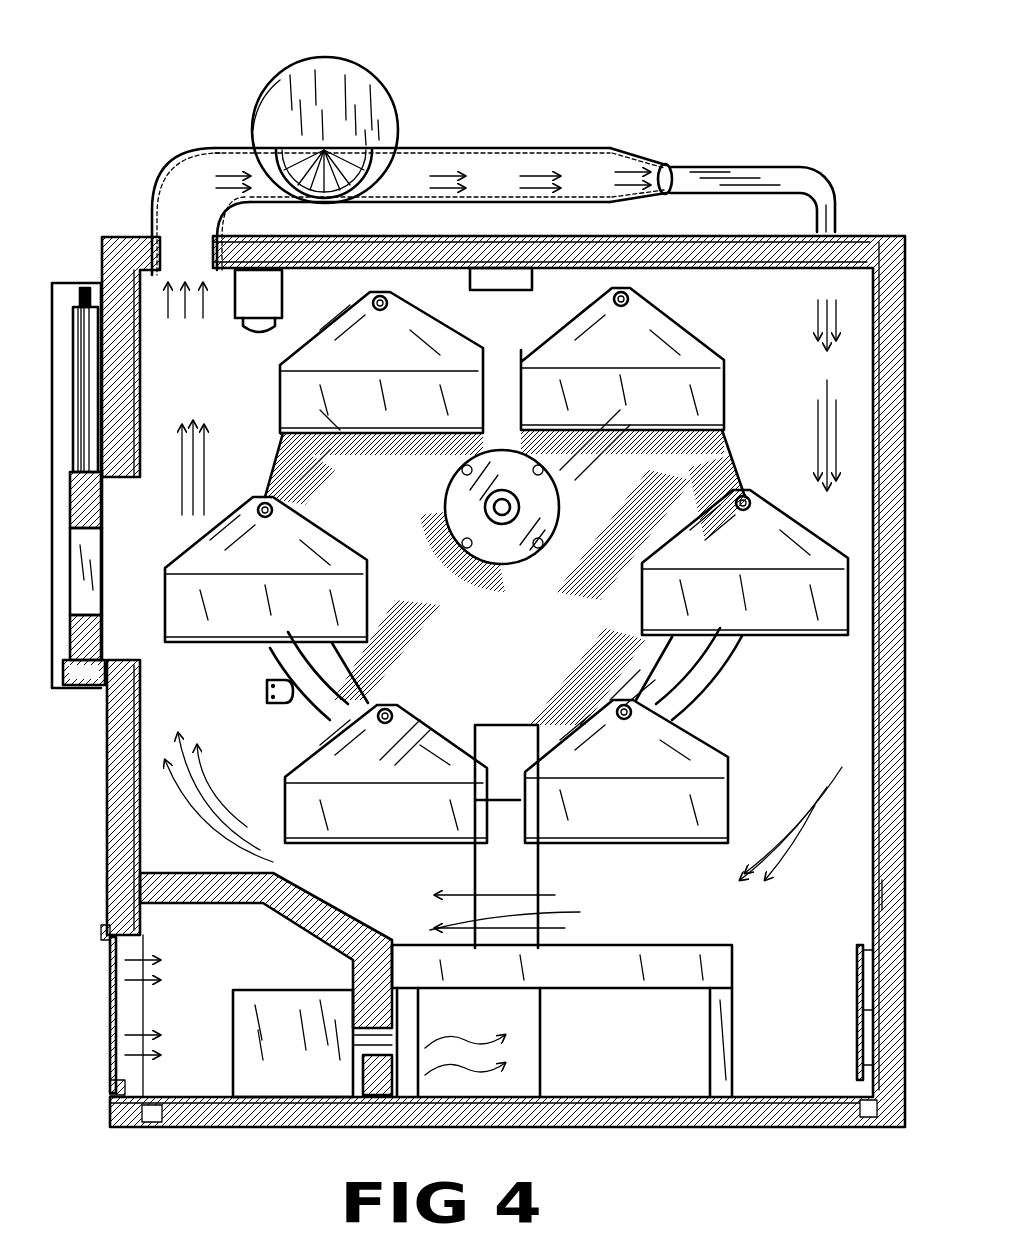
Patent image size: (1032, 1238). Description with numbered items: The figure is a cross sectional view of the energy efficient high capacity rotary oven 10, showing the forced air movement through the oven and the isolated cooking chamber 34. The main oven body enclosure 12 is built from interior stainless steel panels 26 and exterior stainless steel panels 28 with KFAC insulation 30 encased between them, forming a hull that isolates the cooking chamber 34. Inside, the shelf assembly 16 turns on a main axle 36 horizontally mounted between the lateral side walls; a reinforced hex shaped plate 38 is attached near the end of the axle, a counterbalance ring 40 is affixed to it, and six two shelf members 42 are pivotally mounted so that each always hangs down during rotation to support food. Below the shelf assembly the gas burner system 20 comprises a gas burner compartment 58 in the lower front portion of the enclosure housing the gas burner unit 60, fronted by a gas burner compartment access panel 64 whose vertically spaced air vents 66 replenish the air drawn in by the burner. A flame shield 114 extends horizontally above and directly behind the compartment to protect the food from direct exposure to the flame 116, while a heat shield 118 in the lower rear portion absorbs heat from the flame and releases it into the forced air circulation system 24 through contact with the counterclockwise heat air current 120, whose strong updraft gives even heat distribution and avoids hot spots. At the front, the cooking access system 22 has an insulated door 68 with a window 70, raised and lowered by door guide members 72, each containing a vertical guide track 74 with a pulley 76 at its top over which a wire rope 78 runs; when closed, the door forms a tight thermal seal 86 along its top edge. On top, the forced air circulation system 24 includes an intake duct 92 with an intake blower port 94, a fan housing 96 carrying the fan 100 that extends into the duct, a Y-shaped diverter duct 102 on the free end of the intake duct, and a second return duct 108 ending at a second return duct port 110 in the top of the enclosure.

The rotary oven 10 is at (548, 104).
The main oven body enclosure 12 is at (103, 792).
The shelf assembly 16 is at (660, 298).
The gas burner system 20 is at (302, 888).
The cooking access system 22 is at (106, 510).
The forced air circulation system 24 is at (398, 78).
The interior stainless steel panels 26 is at (873, 660).
The exterior stainless steel panels 28 is at (880, 893).
The KFAC insulation 30 is at (873, 712).
The isolated cooking chamber 34 is at (758, 724).
The main axle 36 is at (512, 497).
The hex shaped plates 38 is at (283, 452).
The counterbalance ring 40 is at (330, 728).
The two shelf members 42 is at (278, 406).
The gas burner compartment 58 is at (218, 963).
The gas burner unit 60 is at (281, 1005).
The gas burner compartment access panel 64 is at (108, 995).
The air vents 66 is at (110, 1060).
The insulated door 68 is at (103, 648).
The window 70 is at (95, 605).
The door guide members 72 is at (54, 272).
The vertical guide track 74 is at (100, 330).
The pulley 76 is at (84, 287).
The wire rope 78 is at (98, 390).
The thermal seal 86 is at (105, 482).
The intake duct 92 is at (497, 150).
The intake blower port 94 is at (212, 275).
The fan housing 96 is at (270, 108).
The fan 100 is at (312, 196).
The Y-shaped diverter duct 102 is at (634, 162).
The second return duct 108 is at (765, 170).
The second return duct port 110 is at (818, 275).
The flame shield 114 is at (645, 950).
The flame 116 is at (500, 1018).
The heat shield 118 is at (850, 1035).
The heat air current 120 is at (818, 446).